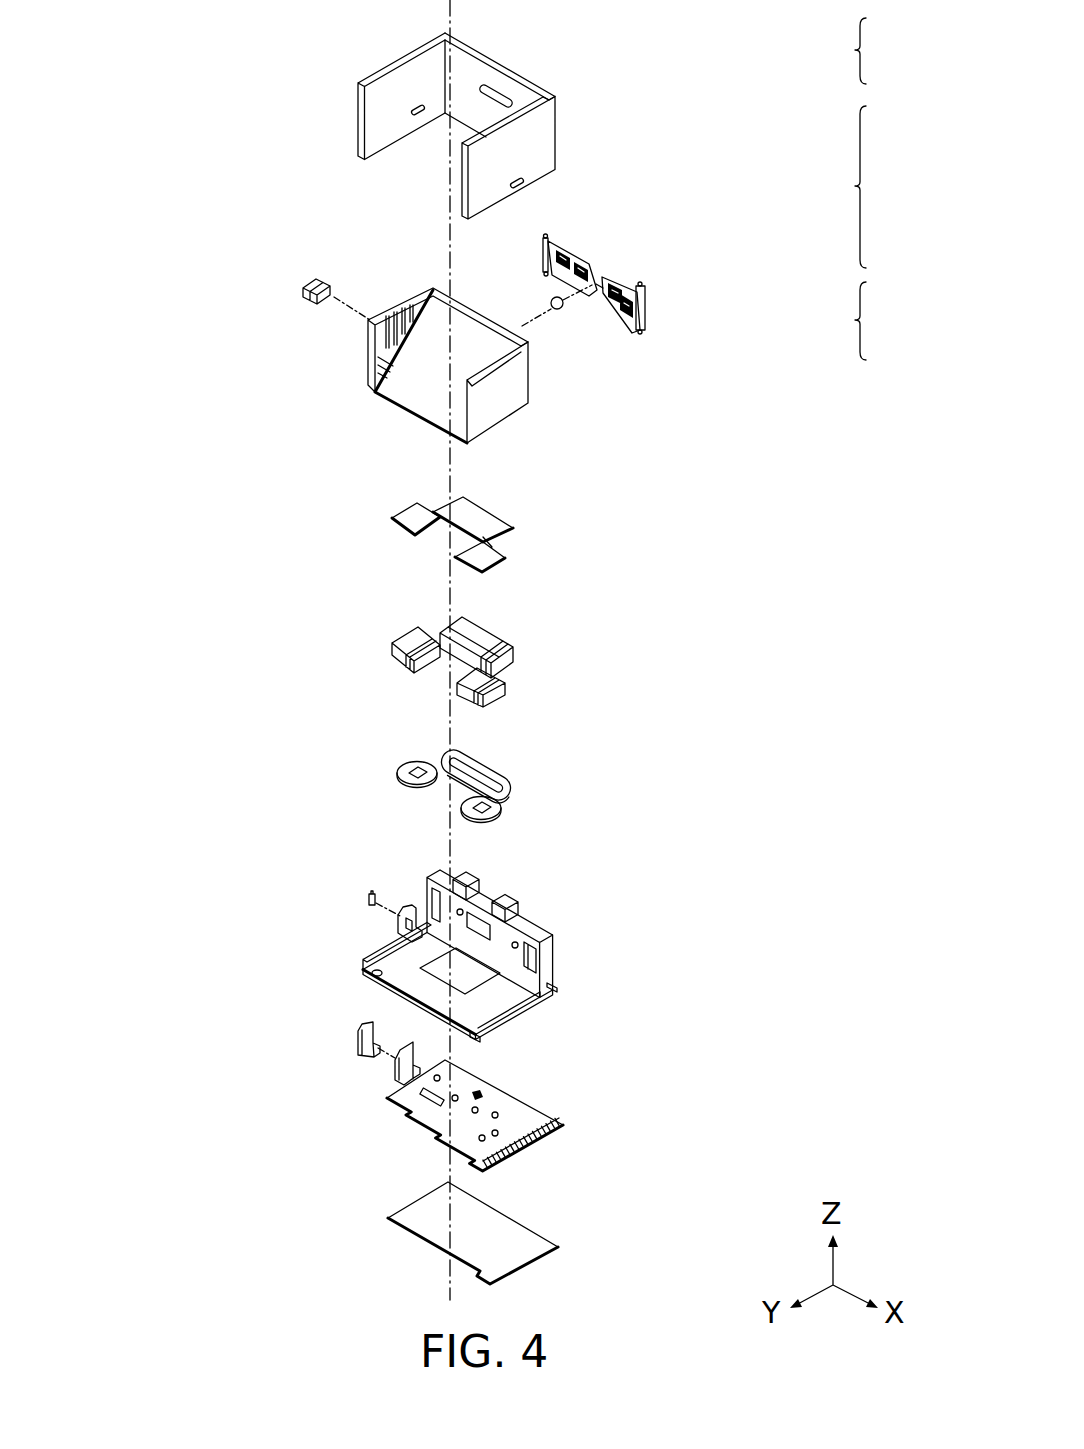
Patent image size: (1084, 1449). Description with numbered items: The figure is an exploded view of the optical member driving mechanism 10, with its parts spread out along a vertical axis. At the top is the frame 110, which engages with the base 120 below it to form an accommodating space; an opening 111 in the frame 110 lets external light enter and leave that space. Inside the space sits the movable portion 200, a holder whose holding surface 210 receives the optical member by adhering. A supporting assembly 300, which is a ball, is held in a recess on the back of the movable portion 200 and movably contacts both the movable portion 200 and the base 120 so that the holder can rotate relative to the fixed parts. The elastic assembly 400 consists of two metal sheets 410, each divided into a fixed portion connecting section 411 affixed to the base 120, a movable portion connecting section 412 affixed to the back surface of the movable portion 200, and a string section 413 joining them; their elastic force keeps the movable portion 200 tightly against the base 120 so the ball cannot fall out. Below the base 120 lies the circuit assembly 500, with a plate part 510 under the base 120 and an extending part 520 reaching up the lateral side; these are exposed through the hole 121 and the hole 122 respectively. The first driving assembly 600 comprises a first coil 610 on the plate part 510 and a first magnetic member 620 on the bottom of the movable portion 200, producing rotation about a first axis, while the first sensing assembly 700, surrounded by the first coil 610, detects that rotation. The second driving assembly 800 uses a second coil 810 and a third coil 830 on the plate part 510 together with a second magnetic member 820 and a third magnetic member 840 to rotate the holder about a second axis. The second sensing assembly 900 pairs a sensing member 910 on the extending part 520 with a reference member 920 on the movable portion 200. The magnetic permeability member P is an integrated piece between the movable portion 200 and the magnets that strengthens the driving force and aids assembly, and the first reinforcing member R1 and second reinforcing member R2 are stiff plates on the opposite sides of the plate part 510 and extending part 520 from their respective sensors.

The optical member driving mechanism 10 is at (122, 25).
The frame 110 is at (500, 116).
The opening 111 is at (462, 77).
The base 120 is at (451, 956).
The hole 121 is at (383, 947).
The hole 122 is at (406, 925).
The movable portion 200 is at (434, 390).
The holding surface 210 is at (423, 390).
The supporting assembly 300 is at (556, 311).
The elastic assembly 400 is at (655, 290).
The metal sheet 410 is at (553, 237).
The fixed portion connecting section 411 is at (600, 296).
The movable portion connecting section 412 is at (646, 322).
The string section 413 is at (620, 308).
The circuit assembly 500 is at (519, 1100).
The plate part 510 is at (528, 1122).
The extending part 520 is at (393, 1065).
The first driving assembly 600 is at (858, 51).
The first coil 610 is at (510, 782).
The first magnetic member 620 is at (515, 655).
The first sensing assembly 700 is at (478, 1092).
The second driving assembly 800 is at (858, 187).
The second coil 810 is at (501, 810).
The second magnetic member 820 is at (507, 688).
The third coil 830 is at (405, 762).
The third magnetic member 840 is at (400, 650).
The second sensing assembly 900 is at (858, 320).
The sensing member 910 is at (373, 893).
The reference member 920 is at (305, 283).
The magnetic permeability member P is at (488, 552).
The first reinforcing member R1 is at (515, 1243).
The second reinforcing member R2 is at (355, 1041).